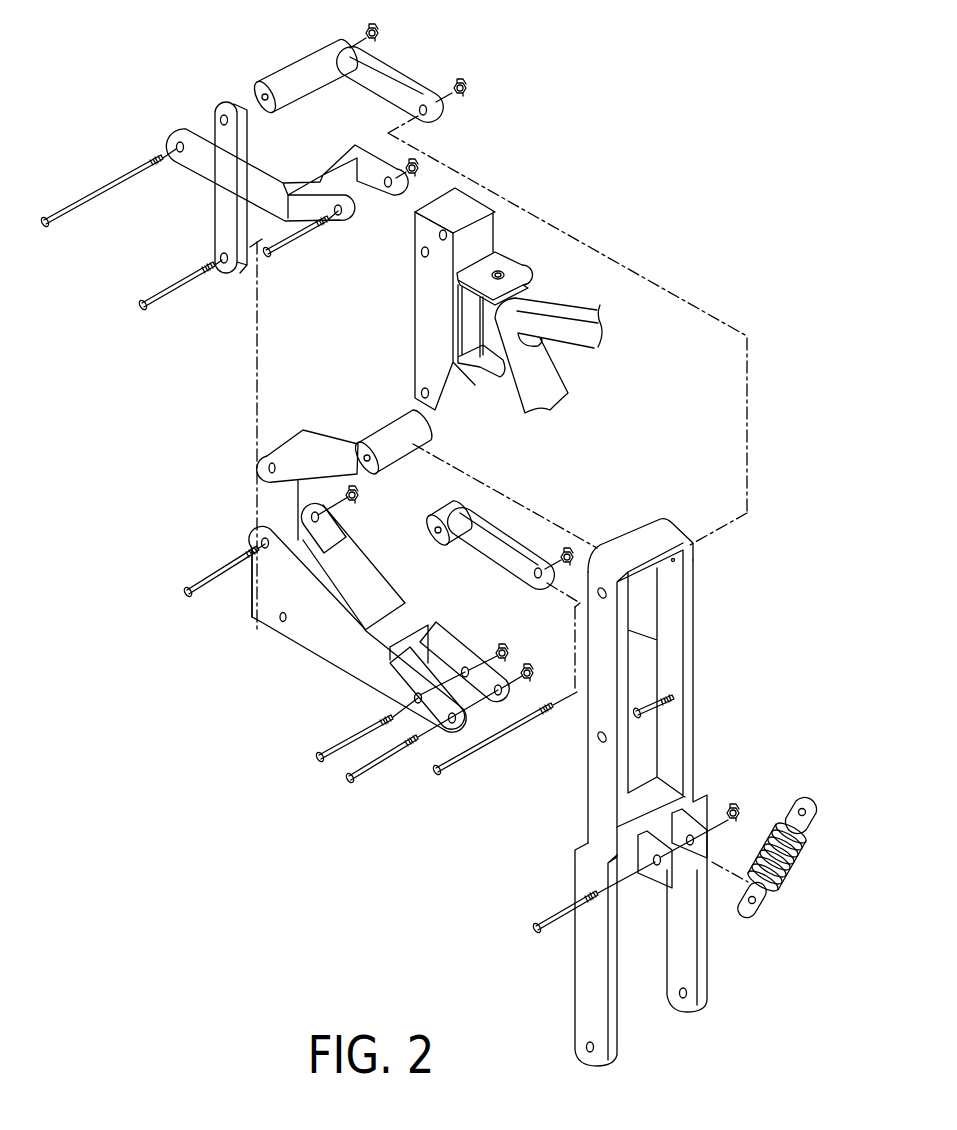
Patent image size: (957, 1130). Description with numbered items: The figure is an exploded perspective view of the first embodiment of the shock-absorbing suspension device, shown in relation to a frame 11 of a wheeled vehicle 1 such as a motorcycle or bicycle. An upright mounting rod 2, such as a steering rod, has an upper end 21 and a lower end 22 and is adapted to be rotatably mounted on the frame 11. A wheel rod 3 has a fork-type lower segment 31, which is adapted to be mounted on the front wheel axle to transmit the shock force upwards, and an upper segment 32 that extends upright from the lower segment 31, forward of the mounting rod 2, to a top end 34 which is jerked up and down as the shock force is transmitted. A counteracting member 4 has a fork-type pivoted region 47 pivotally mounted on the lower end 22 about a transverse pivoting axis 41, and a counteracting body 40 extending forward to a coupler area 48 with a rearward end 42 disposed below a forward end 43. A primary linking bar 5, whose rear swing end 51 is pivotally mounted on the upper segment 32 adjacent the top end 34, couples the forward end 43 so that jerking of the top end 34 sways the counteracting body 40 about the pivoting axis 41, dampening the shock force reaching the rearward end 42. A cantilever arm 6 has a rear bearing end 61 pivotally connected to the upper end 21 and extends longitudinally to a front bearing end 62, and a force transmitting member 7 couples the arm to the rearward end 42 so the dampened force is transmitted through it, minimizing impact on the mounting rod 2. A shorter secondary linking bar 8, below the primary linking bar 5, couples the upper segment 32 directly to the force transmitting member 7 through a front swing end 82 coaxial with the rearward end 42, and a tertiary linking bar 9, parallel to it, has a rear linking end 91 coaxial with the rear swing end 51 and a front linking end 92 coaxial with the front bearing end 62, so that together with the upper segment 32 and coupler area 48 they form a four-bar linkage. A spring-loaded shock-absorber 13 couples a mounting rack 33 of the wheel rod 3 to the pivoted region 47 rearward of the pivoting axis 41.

The wheeled vehicle 1 is at (592, 290).
The frame 11 is at (552, 305).
The spring-loaded shock-absorber 13 is at (800, 892).
The mounting rod 2 is at (470, 213).
The upper end 21 is at (425, 227).
The lower end 22 is at (428, 383).
The wheel rod 3 is at (628, 764).
The lower segment 31 is at (585, 953).
The upper segment 32 is at (602, 710).
The mounting rack 33 is at (688, 877).
The top end 34 is at (602, 575).
The counteracting member 4 is at (460, 646).
The counteracting body 40 is at (313, 640).
The pivoting axis 41 is at (412, 698).
The rearward end 42 is at (277, 621).
The forward end 43 is at (260, 538).
The pivoted region 47 is at (338, 765).
The coupler area 48 is at (260, 587).
The primary linking bar 5 is at (350, 418).
The rear swing end 51 is at (363, 445).
The cantilever arm 6 is at (177, 131).
The rear bearing end 61 is at (343, 222).
The front bearing end 62 is at (167, 145).
The force transmitting member 7 is at (222, 101).
The secondary linking bar 8 is at (515, 521).
The front swing end 82 is at (435, 527).
The tertiary linking bar 9 is at (403, 66).
The rear linking end 91 is at (432, 84).
The front linking end 92 is at (270, 90).